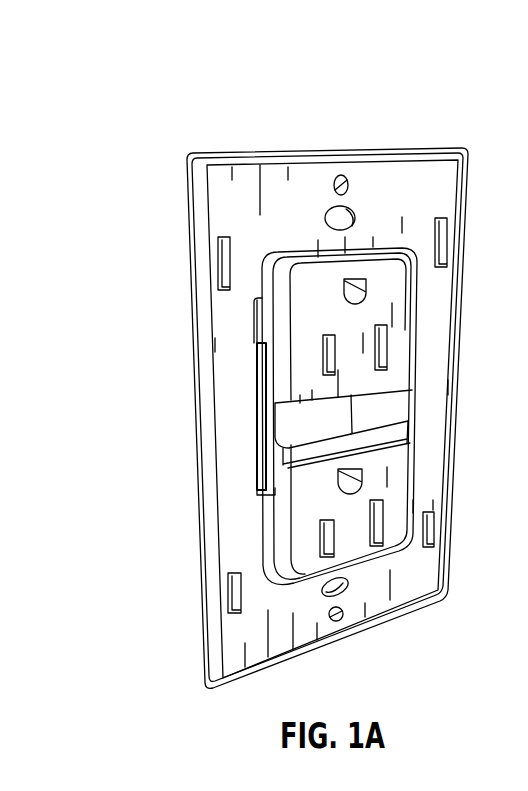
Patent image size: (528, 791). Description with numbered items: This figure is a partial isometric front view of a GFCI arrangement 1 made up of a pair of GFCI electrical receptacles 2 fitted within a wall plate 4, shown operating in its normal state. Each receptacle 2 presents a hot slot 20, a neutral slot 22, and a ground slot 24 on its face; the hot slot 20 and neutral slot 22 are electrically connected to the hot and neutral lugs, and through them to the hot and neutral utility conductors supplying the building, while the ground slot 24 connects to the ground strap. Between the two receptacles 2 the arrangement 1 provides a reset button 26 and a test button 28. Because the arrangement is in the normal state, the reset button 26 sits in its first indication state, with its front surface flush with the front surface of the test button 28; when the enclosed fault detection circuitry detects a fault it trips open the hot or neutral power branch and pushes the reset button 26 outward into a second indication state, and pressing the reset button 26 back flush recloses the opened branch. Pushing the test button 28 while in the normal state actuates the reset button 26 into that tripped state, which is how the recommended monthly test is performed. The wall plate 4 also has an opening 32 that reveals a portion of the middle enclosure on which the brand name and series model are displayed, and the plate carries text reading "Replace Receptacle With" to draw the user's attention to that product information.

The GFCI arrangement 1 is at (170, 112).
The GFCI electrical receptacle 2 is at (398, 278).
The wall plate 4 is at (272, 187).
The hot slot 20 is at (318, 352).
The neutral slot 22 is at (399, 370).
The ground slot 24 is at (369, 288).
The reset button 26 is at (315, 430).
The test button 28 is at (388, 417).
The opening 32 is at (249, 312).